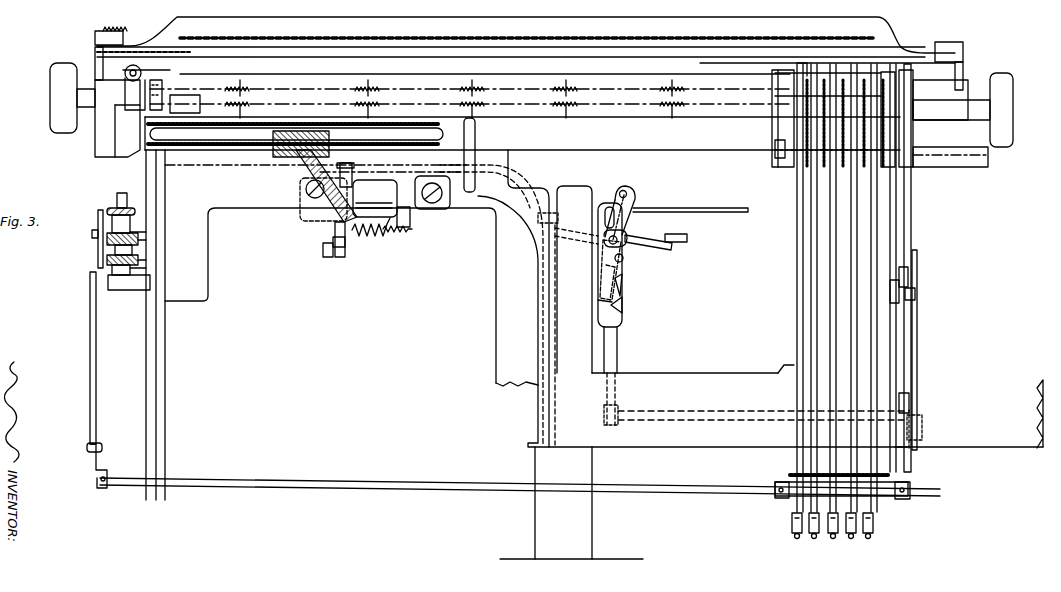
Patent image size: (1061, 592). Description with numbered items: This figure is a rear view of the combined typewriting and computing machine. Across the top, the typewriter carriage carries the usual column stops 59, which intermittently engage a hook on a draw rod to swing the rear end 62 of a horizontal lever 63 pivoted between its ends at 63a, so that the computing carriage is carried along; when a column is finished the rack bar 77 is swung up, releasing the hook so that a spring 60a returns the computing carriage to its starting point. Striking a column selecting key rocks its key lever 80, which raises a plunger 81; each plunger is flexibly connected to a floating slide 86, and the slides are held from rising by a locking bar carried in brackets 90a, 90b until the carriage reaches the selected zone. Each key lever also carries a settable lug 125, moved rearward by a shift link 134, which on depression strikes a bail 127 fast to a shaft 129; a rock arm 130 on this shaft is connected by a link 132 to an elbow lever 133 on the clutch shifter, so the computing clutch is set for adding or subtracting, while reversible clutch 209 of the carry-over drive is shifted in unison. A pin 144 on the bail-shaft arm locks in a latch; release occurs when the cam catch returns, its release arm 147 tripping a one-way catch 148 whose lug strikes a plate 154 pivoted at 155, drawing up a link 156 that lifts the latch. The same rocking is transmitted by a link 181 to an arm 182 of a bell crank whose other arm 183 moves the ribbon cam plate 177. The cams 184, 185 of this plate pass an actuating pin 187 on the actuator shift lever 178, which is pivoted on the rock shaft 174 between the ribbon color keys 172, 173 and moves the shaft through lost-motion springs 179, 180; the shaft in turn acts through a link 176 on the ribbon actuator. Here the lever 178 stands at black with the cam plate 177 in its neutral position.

The column stops 59 is at (366, 85).
The rack bar 77 is at (437, 92).
The rear end of horizontal lever 62 is at (323, 201).
The horizontal lever 63 is at (381, 203).
The pivot of horizontal lever 63a is at (348, 187).
The spring 60a is at (370, 233).
The ribbon color key 172 is at (574, 279).
The cam plate 177 is at (622, 325).
The arm of bell crank lever 183 is at (604, 415).
The link 176 is at (690, 201).
The rock shaft 174 is at (626, 236).
The ribbon color key 173 is at (687, 239).
The spring 179 is at (602, 256).
The spring 180 is at (624, 259).
The actuator shift lever 178 is at (606, 278).
The cam 185 is at (623, 288).
The cam 184 is at (624, 309).
The actuating pin 187 is at (598, 305).
The bracket 90b is at (779, 168).
The bracket 90a is at (909, 166).
The floating slide 86 is at (798, 190).
The plunger 81 is at (811, 300).
The release arm 147 is at (912, 236).
The one-way catch 148 is at (910, 272).
The plate 154 is at (900, 284).
The pivot of plate 155 is at (916, 294).
The link 156 is at (916, 365).
The pin 144 is at (910, 408).
The arm of bell crank lever 182 is at (914, 437).
The link 181 is at (905, 449).
The bail 127 is at (906, 499).
The shaft 129 is at (224, 487).
The settable lug 125 is at (792, 523).
The shift link 134 is at (798, 539).
The column selecting key lever 80 is at (867, 539).
The reversible clutch 209 is at (98, 250).
The elbow lever 133 is at (98, 258).
The link 132 is at (90, 398).
The rock arm 130 is at (92, 452).